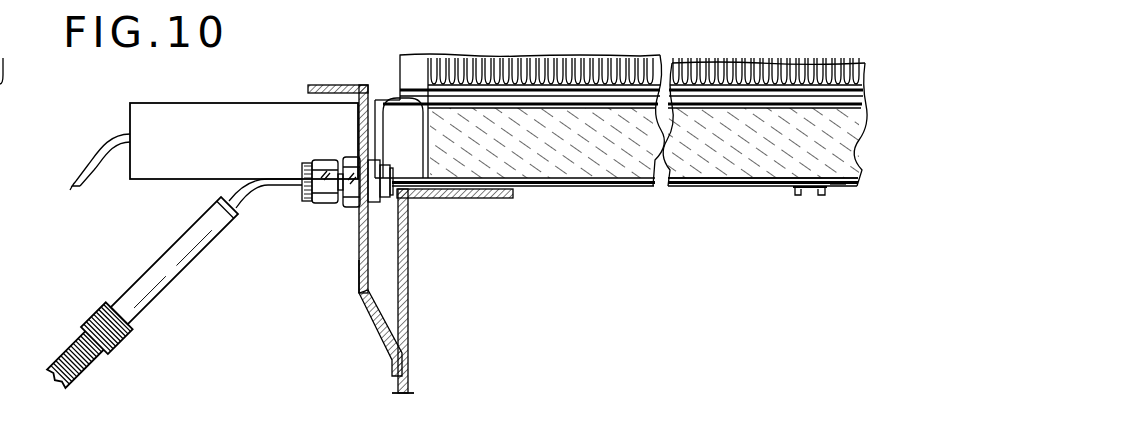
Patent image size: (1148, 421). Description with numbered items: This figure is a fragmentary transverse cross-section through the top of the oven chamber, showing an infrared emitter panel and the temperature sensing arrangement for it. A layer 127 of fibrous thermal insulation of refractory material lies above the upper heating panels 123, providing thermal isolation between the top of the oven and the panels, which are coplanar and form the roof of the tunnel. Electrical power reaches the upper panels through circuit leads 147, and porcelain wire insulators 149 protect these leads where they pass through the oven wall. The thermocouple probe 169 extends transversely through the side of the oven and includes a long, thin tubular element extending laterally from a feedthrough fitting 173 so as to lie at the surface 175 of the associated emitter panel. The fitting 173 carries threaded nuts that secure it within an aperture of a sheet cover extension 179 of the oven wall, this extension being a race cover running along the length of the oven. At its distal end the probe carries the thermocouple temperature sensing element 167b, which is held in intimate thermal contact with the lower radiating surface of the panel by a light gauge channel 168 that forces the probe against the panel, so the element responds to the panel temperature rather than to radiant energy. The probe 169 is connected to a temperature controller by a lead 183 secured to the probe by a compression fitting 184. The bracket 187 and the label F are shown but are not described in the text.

The porcelain wire insulator 149 is at (254, 103).
The circuit lead 147 is at (111, 167).
The lead 183 is at (187, 272).
The compression fitting 184 is at (312, 203).
The feedthrough fitting 173 is at (346, 156).
The mounting bracket 187 is at (362, 236).
The force direction F is at (358, 282).
The sheet cover extension 179 is at (370, 318).
The layer of fibrous thermal insulation 127 is at (500, 60).
The upper heating panel 123 is at (540, 165).
The thermocouple probe 169 is at (606, 165).
The surface 175 is at (699, 172).
The light gauge channel 168 is at (810, 197).
The thermocouple temperature sensing element 167b is at (838, 182).